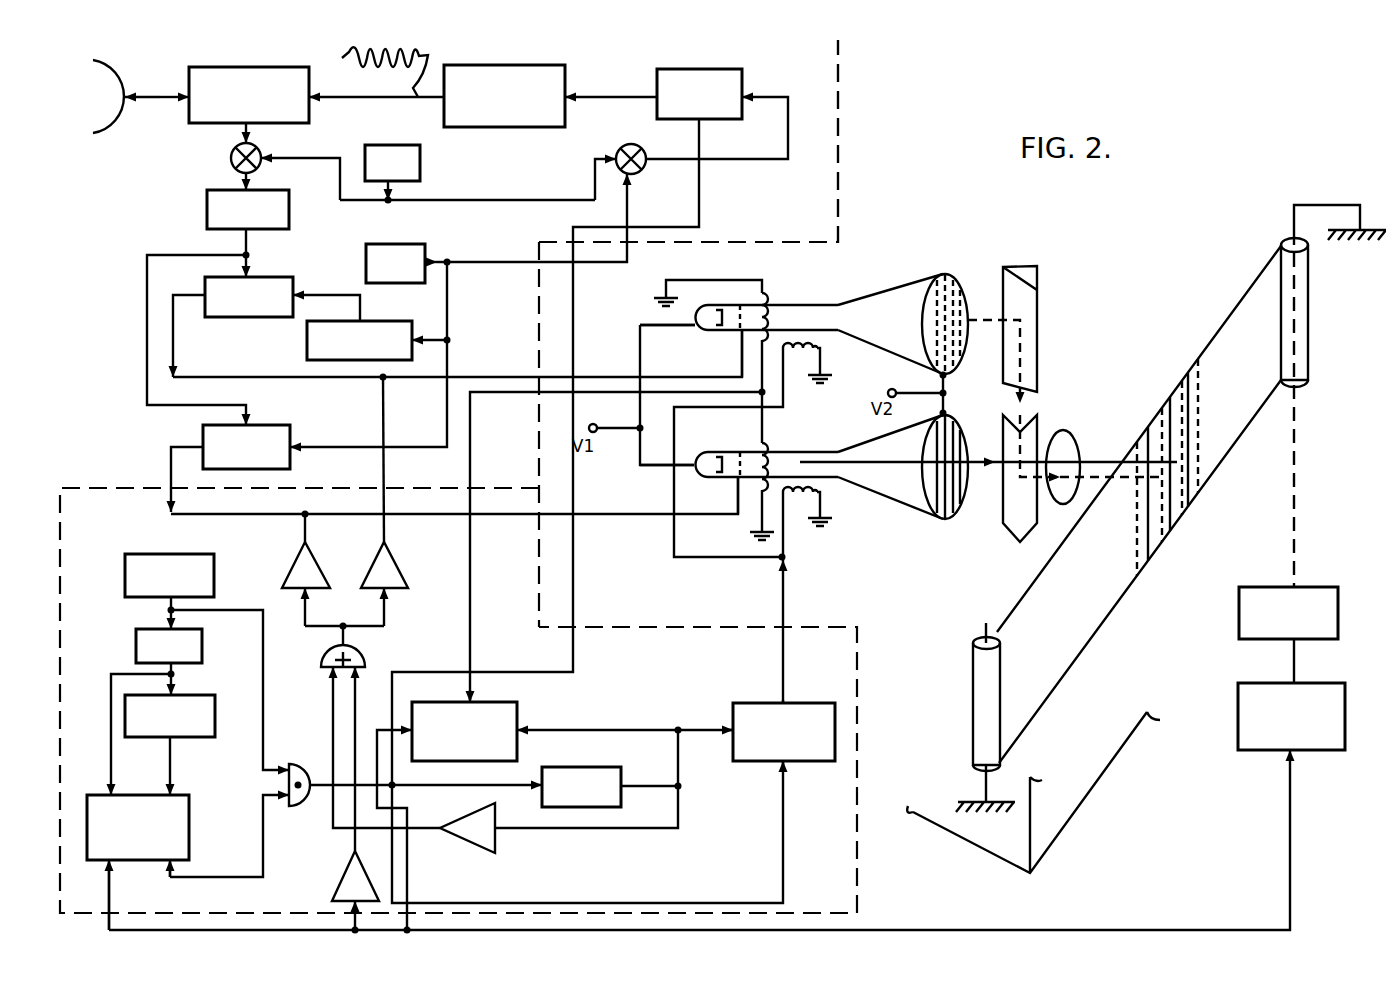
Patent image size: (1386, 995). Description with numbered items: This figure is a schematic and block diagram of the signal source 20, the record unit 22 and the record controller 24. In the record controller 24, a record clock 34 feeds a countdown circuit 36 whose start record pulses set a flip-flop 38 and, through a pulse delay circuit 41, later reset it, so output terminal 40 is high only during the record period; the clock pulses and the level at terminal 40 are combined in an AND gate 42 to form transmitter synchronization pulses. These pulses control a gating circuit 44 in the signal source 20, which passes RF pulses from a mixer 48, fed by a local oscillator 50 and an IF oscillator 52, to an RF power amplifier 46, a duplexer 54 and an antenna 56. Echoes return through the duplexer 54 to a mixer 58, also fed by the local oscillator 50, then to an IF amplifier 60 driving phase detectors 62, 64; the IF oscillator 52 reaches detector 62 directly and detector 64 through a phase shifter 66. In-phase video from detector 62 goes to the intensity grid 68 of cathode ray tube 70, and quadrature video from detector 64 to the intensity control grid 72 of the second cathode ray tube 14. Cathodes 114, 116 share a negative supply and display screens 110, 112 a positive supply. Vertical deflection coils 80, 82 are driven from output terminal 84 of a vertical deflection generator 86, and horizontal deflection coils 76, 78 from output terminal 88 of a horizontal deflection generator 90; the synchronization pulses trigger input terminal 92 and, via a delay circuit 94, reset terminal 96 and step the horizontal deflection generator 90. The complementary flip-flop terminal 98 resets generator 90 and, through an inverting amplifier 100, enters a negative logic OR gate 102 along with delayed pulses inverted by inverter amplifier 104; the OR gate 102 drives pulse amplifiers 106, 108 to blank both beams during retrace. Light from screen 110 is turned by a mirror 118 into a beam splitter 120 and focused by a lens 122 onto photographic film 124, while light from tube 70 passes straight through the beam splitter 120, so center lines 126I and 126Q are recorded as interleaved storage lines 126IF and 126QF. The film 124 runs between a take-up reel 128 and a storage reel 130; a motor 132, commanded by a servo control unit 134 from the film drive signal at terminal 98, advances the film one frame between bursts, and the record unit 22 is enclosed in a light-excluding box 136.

The first cathode ray tube 14 is at (838, 344).
The signal source 20 is at (830, 145).
The record unit 22 is at (1088, 293).
The record controller 24 is at (94, 486).
The record clock 34 is at (131, 554).
The countdown circuit 36 is at (202, 646).
The flip-flop 38 is at (176, 830).
The output terminal of flip-flop 40 is at (160, 870).
The pulse delay circuit 41 is at (205, 695).
The AND gate 42 is at (291, 763).
The gating circuit 44 is at (726, 72).
The RF power amplifier 46 is at (567, 72).
The mixer 48 is at (640, 144).
The RF local oscillator 50 is at (421, 165).
The IF oscillator 52 is at (428, 246).
The duplexer 54 is at (248, 68).
The antenna 56 is at (110, 69).
The mixer 58 is at (229, 158).
The IF amplifier 60 is at (207, 208).
The phase detector 62 is at (292, 427).
The phase detector 64 is at (280, 312).
The phase shifter 66 is at (380, 321).
The intensity grid 68 is at (738, 452).
The cathode ray tube 70 is at (840, 492).
The intensity control grid 72 is at (737, 332).
The horizontal deflection coil 76 is at (765, 445).
The horizontal deflection coil 78 is at (768, 292).
The vertical deflection coil 80 is at (800, 486).
The vertical deflection coil 82 is at (805, 340).
The output terminal of vertical deflection generator 84 is at (790, 700).
The vertical deflection generator 86 is at (838, 725).
The output terminal of horizontal deflection generator 88 is at (476, 698).
The horizontal deflection generator 90 is at (517, 712).
The trigger input terminal 92 is at (783, 770).
The delay circuit 94 is at (600, 767).
The reset terminal 96 is at (728, 742).
The terminal of flip-flop 98 is at (105, 862).
The inverting amplifier 100 is at (330, 874).
The negative logic OR gate 102 is at (367, 652).
The inverter amplifier 104 is at (482, 840).
The pulse amplifier 106 is at (318, 562).
The pulse amplifier 108 is at (403, 575).
The display screen 110 is at (953, 362).
The display screen 112 is at (957, 418).
The cathode 114 is at (685, 330).
The cathode 116 is at (708, 480).
The mirror 118 is at (1037, 310).
The optical beam splitter 120 is at (1045, 415).
The optical focusing lens 122 is at (1075, 441).
The photographic film 124 is at (1078, 660).
The center vertical line on quadrature tube screen 126Q is at (951, 272).
The center vertical line on in-phase tube screen 126I is at (957, 527).
The information storage line 126IF is at (1181, 522).
The information storage line 126QF is at (1169, 550).
The take-up reel 128 is at (1309, 308).
The storage reel 130 is at (978, 688).
The motor 132 is at (1340, 587).
The electronic servo control unit 134 is at (1258, 748).
The box type structure 136 is at (1082, 808).